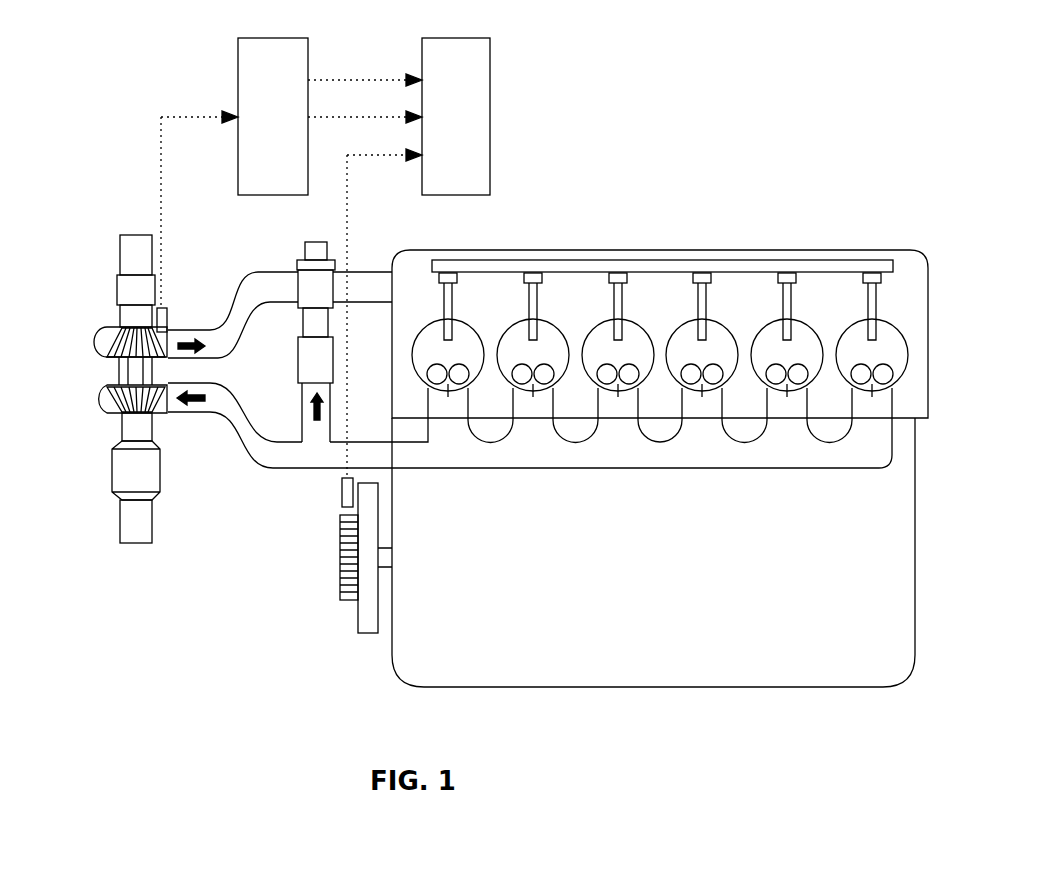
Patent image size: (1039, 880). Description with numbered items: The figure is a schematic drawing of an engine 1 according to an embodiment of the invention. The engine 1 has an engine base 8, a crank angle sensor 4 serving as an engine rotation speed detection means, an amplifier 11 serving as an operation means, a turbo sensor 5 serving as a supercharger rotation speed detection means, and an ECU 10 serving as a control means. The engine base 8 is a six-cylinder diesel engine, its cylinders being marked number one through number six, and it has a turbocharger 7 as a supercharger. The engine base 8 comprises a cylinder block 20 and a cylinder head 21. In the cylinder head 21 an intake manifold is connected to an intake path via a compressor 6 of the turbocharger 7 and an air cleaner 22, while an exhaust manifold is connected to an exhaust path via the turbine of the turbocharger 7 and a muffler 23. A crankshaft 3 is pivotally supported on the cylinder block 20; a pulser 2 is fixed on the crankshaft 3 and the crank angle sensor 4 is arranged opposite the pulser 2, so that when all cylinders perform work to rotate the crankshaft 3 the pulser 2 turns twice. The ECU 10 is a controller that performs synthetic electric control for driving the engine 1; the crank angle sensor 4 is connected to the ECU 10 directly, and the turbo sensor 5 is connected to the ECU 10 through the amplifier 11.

The engine 1 is at (912, 118).
The pulser 2 is at (338, 557).
The crankshaft 3 is at (380, 568).
The crank angle sensor 4 is at (340, 493).
The turbo sensor 5 is at (165, 308).
The compressor 6 is at (102, 330).
The turbocharger 7 is at (100, 385).
The engine base 8 is at (938, 226).
The ECU 10 is at (399, 257).
The amplifier 11 is at (234, 173).
The cylinder block 20 is at (940, 512).
The cylinder head 21 is at (940, 349).
The air cleaner 22 is at (118, 277).
The muffler 23 is at (112, 465).